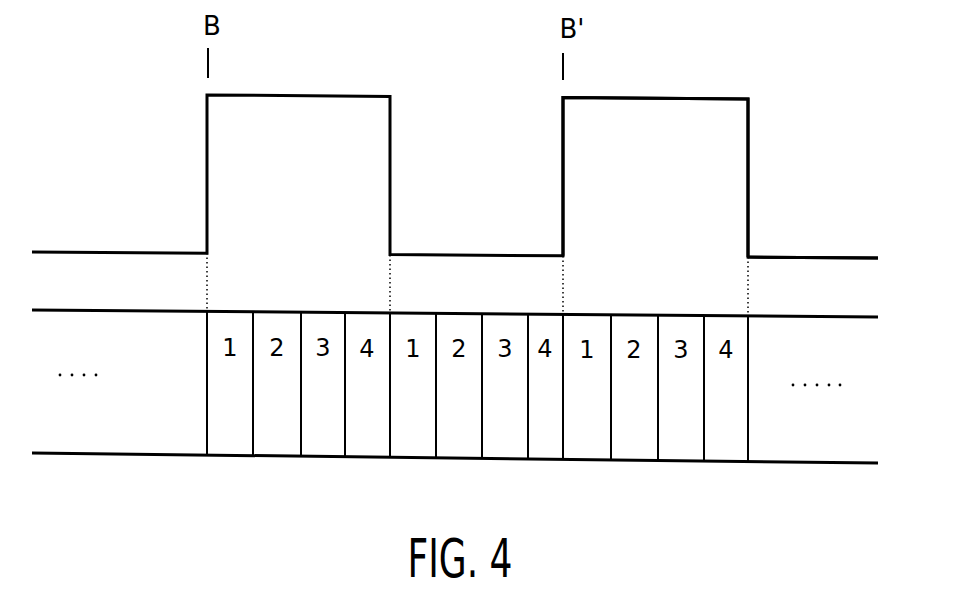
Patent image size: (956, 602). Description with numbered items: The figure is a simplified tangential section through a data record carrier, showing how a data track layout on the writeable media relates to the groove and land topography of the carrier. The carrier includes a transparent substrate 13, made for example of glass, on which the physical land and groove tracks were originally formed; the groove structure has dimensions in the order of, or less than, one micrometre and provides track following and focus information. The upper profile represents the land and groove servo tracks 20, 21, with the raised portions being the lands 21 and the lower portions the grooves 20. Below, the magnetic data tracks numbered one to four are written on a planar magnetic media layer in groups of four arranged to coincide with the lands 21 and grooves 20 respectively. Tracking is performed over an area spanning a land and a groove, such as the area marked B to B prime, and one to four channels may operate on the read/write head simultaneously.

The transparent substrate 13 is at (95, 150).
The groove servo track 20 is at (818, 246).
The land servo track 21 is at (678, 79).